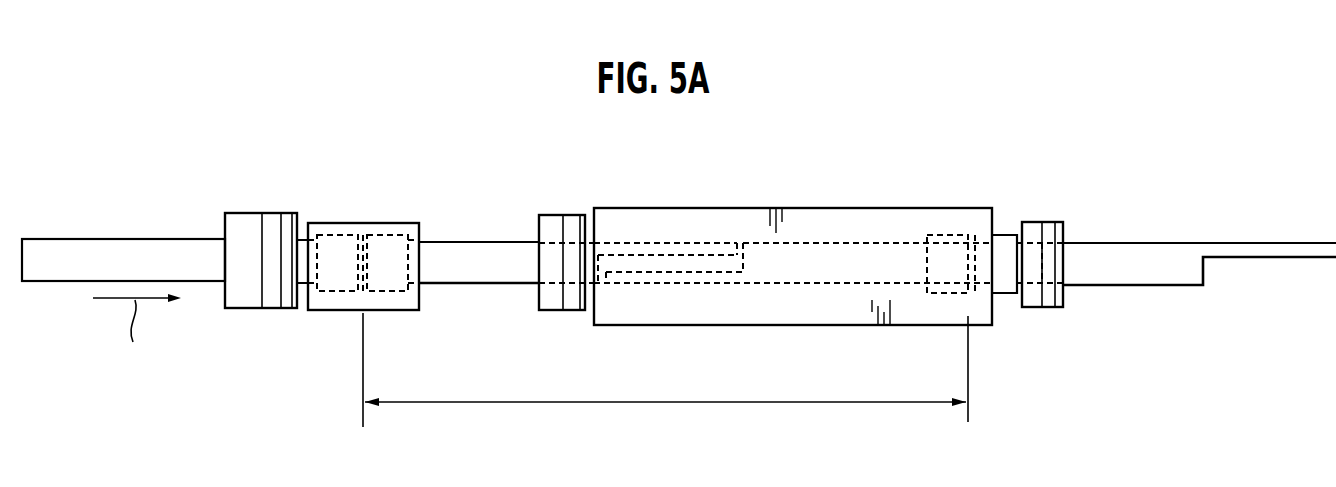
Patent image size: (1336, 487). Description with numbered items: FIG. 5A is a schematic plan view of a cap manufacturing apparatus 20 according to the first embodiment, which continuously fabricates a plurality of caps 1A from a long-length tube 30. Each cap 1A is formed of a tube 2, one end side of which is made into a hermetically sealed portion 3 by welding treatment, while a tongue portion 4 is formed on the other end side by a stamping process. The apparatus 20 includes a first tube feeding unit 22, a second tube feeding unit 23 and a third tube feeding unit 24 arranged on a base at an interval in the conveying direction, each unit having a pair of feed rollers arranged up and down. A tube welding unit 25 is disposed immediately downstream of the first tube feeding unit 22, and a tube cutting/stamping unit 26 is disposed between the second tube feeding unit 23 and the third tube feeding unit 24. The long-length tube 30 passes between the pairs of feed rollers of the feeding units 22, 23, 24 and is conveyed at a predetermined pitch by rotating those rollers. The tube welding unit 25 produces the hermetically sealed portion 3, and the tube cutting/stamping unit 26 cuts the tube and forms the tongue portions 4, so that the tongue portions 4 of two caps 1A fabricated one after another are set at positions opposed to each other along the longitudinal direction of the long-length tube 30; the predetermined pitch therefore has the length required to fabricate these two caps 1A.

The cap 1A is at (1185, 229).
The tube 2 is at (1128, 268).
The hermetically sealed portion 3 is at (340, 293).
The tongue portion 4 is at (659, 243).
The cap manufacturing apparatus 20 is at (166, 160).
The first tube feeding unit 22 is at (257, 197).
The second tube feeding unit 23 is at (567, 199).
The third tube feeding unit 24 is at (1039, 206).
The tube welding unit 25 is at (360, 207).
The tube cutting/stamping unit 26 is at (800, 192).
The long-length tube 30 is at (75, 249).